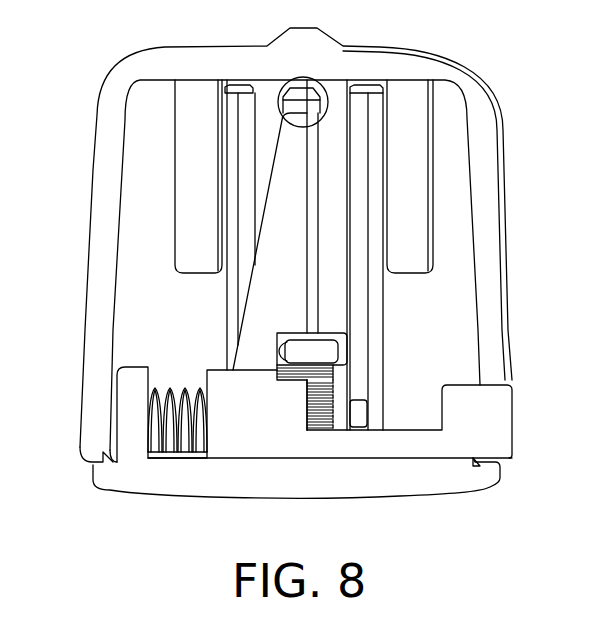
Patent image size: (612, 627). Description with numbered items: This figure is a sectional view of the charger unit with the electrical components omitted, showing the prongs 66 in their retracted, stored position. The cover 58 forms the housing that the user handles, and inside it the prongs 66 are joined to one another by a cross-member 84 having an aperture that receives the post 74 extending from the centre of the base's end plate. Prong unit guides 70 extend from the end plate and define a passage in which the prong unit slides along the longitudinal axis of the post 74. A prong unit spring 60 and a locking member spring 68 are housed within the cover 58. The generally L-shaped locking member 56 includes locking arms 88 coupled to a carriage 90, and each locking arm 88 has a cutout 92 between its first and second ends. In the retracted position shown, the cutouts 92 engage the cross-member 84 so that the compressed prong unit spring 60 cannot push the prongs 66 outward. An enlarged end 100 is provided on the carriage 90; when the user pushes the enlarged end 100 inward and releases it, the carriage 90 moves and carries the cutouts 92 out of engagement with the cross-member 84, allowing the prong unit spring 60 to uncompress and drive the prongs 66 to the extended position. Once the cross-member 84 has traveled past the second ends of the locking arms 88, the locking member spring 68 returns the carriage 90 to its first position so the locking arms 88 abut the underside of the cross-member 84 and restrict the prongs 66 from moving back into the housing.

The cover 58 is at (107, 178).
The prong unit guides 70 is at (372, 127).
The prongs 66 is at (335, 210).
The post 74 is at (295, 108).
The locking arms 88 is at (283, 240).
The locking member 56 is at (268, 281).
The cross-member 84 is at (327, 348).
The cutout 92 is at (278, 353).
The prong unit spring 60 is at (333, 388).
The locking member spring 68 is at (165, 408).
The enlarged end 100 is at (475, 413).
The carriage 90 is at (410, 443).